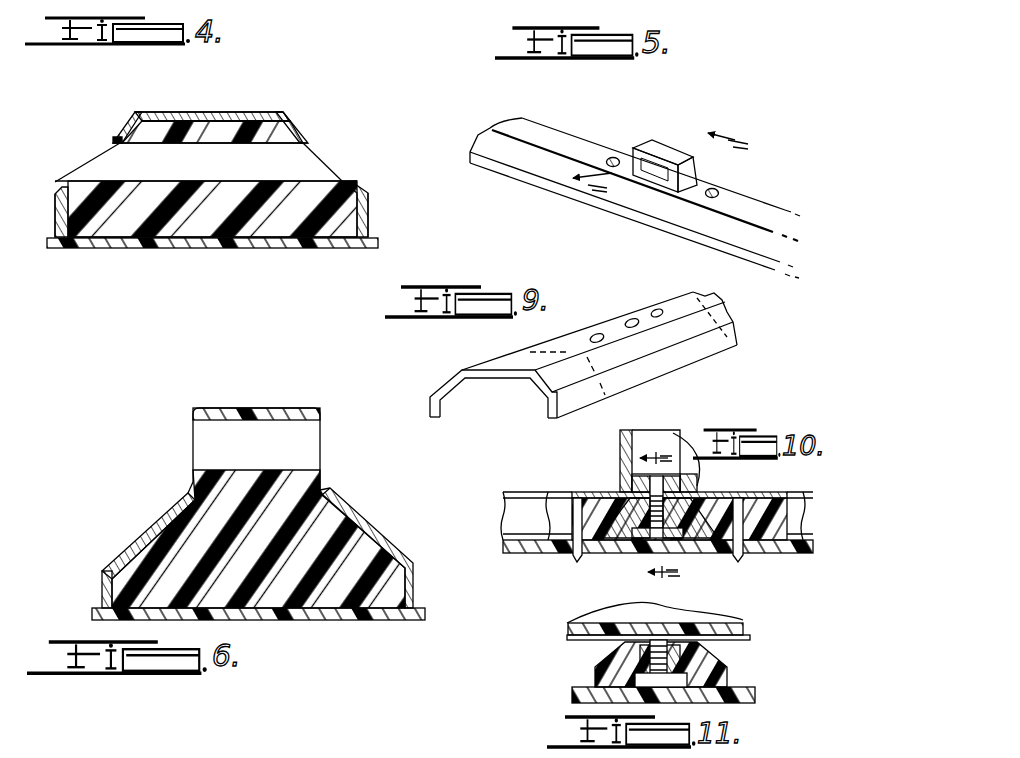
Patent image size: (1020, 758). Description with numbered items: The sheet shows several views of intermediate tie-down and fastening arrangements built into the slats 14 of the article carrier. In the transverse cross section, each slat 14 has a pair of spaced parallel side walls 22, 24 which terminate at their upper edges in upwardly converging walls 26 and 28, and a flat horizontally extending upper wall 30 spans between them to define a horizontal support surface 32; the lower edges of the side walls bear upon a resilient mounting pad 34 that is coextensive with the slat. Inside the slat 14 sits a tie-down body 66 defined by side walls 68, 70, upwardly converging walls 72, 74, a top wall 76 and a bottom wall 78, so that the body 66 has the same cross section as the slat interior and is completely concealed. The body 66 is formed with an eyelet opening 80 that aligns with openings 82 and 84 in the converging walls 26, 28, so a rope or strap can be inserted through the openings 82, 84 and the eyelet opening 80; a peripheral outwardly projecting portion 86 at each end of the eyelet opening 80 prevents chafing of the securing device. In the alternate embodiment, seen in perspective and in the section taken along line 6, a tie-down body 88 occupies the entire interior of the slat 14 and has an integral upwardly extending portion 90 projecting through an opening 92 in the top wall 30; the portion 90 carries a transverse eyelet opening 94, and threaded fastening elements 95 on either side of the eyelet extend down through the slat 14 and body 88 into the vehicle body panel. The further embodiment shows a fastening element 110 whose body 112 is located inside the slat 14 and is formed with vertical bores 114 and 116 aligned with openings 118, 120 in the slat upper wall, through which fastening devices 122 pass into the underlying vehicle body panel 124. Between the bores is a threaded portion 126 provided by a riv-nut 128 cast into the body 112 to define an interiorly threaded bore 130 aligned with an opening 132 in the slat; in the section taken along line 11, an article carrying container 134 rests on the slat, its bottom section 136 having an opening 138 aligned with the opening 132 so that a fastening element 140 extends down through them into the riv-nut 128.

In FIG. 4, the slat 14 is at (373, 200).
In FIG. 5, the slat 14 is at (524, 160).
In FIG. 9, the slat 14 is at (488, 362).
In FIG. 6, the slat 14 is at (380, 530).
In FIG. 10, the slat 14 is at (600, 490).
In FIG. 11, the slat 14 is at (733, 675).
In FIG. 4, the side wall 22 is at (368, 228).
In FIG. 4, the side wall 24 is at (55, 223).
In FIG. 4, the upwardly converging wall 26 is at (302, 127).
In FIG. 4, the upwardly converging wall 28 is at (120, 128).
In FIG. 4, the upper wall 30 is at (225, 112).
In FIG. 4, the horizontal support surface 32 is at (262, 110).
In FIG. 4, the mounting pad 34 is at (336, 248).
In FIG. 6, the mounting pad 34 is at (392, 622).
In FIG. 4, the tie-down body 66 is at (205, 233).
In FIG. 4, the side wall 68 is at (372, 204).
In FIG. 4, the side wall 70 is at (54, 206).
In FIG. 4, the upwardly converging wall 72 is at (272, 130).
In FIG. 4, the upwardly converging wall 74 is at (118, 128).
In FIG. 4, the top wall 76 is at (166, 119).
In FIG. 4, the bottom wall 78 is at (124, 243).
In FIG. 4, the eyelet opening 80 is at (214, 150).
In FIG. 4, the opening 82 is at (306, 141).
In FIG. 4, the opening 84 is at (103, 142).
In FIG. 4, the peripheral outwardly projecting portion 86 is at (340, 182).
In FIG. 6, the tie-down body 88 is at (332, 600).
In FIG. 5, the upwardly extending portion 90 is at (660, 148).
In FIG. 6, the upwardly extending portion 90 is at (300, 478).
In FIG. 6, the opening 92 is at (190, 480).
In FIG. 5, the eyelet opening 94 is at (640, 160).
In FIG. 6, the eyelet opening 94 is at (265, 422).
In FIG. 5, the threaded fastening elements 95 is at (606, 158).
In FIG. 5, the section line 6 is at (648, 149).
In FIG. 10, the section line 11 is at (649, 507).
In FIG. 9, the fastening element 110 is at (670, 360).
In FIG. 10, the body 112 is at (717, 494).
In FIG. 11, the body 112 is at (710, 665).
In FIG. 10, the vertical bore 114 is at (773, 497).
In FIG. 10, the vertical bore 116 is at (553, 553).
In FIG. 10, the opening 118 is at (749, 497).
In FIG. 10, the opening 120 is at (570, 491).
In FIG. 9, the fastening devices 122 is at (598, 334).
In FIG. 10, the fastening devices 122 is at (575, 564).
In FIG. 10, the vehicle body panel 124 is at (780, 553).
In FIG. 11, the vehicle body panel 124 is at (751, 703).
In FIG. 10, the threaded portion 126 is at (685, 513).
In FIG. 11, the threaded portion 126 is at (597, 663).
In FIG. 11, the riv-nut 128 is at (718, 653).
In FIG. 10, the interiorly threaded bore 130 is at (645, 512).
In FIG. 11, the interiorly threaded bore 130 is at (640, 675).
In FIG. 9, the opening 132 is at (632, 319).
In FIG. 10, the opening 132 is at (630, 478).
In FIG. 11, the opening 132 is at (664, 637).
In FIG. 10, the article carrying container 134 is at (634, 425).
In FIG. 11, the article carrying container 134 is at (720, 605).
In FIG. 10, the bottom section 136 is at (672, 447).
In FIG. 11, the bottom section 136 is at (740, 627).
In FIG. 11, the opening 138 is at (658, 635).
In FIG. 10, the fastening element 140 is at (670, 556).
In FIG. 11, the fastening element 140 is at (650, 650).